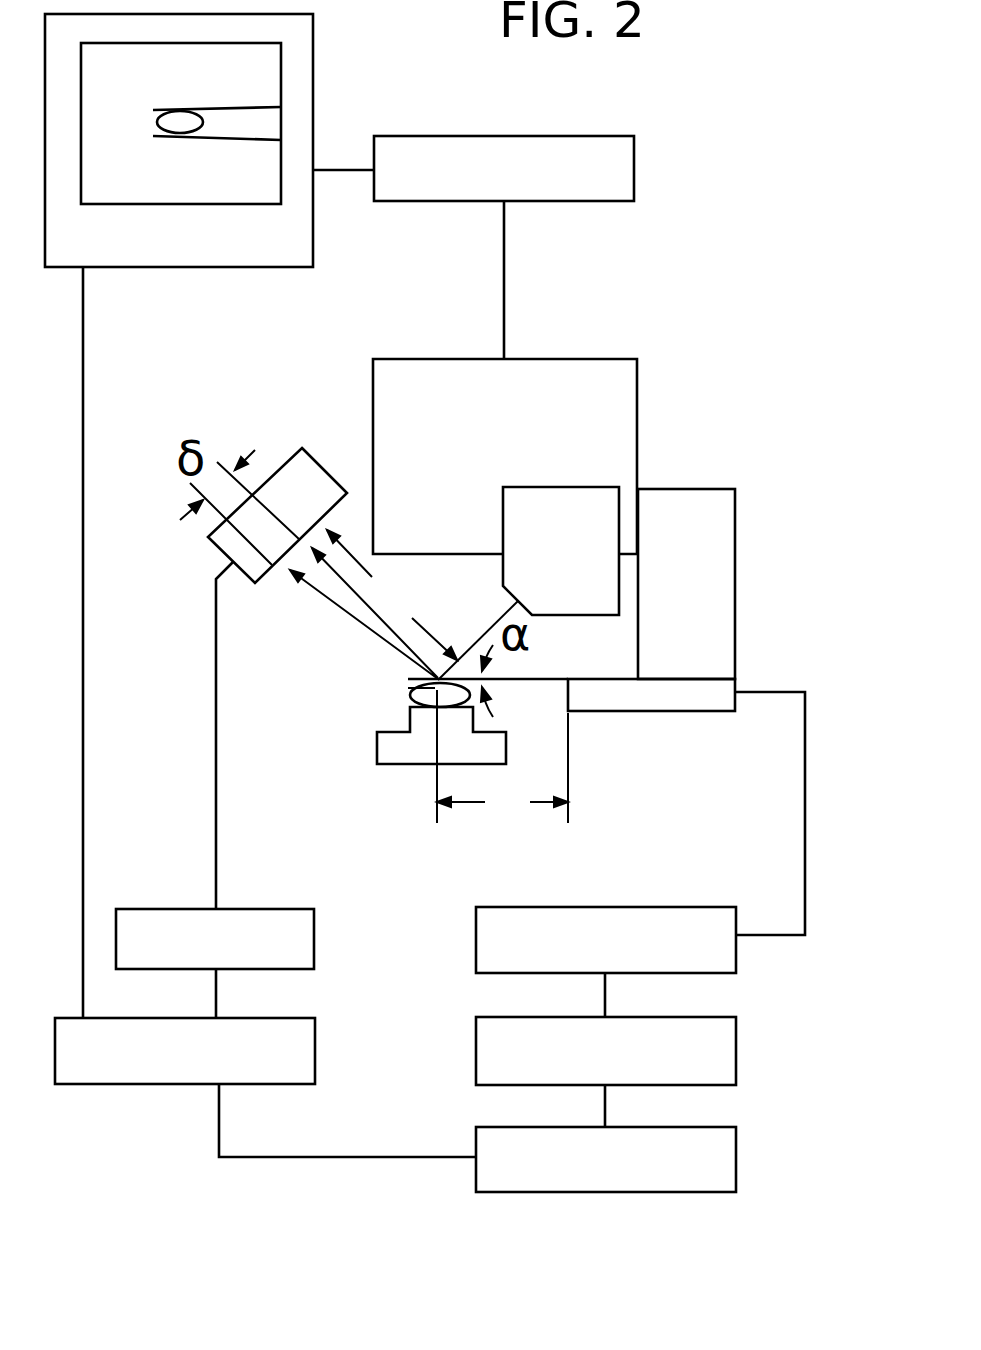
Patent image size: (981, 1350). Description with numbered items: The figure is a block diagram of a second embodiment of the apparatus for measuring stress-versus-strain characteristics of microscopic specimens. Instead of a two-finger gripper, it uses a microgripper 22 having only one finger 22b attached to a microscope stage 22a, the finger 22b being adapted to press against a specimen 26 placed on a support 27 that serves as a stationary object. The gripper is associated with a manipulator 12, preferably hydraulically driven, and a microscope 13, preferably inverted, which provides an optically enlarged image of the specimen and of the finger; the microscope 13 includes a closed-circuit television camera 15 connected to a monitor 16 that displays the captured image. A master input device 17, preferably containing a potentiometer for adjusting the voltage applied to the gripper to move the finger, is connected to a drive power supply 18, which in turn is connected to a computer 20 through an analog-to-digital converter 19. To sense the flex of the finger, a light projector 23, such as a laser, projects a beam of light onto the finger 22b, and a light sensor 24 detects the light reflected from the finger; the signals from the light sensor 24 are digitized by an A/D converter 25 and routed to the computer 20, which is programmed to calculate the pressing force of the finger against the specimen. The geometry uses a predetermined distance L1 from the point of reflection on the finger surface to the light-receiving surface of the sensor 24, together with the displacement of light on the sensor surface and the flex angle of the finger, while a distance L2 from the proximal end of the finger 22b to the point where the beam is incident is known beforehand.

The manipulator 12 is at (715, 553).
The microscope 13 is at (577, 380).
The closed-circuit television camera 15 is at (580, 160).
The monitor 16 is at (293, 62).
The master input device 17 is at (483, 935).
The drive power supply 18 is at (493, 1048).
The analog-to-digital converter 19 is at (498, 1150).
The computer 20 is at (273, 1037).
The microgripper 22 is at (571, 745).
The microscope stage 22a is at (693, 699).
The finger 22b is at (513, 678).
The light projector 23 is at (503, 588).
The light sensor 24 is at (295, 478).
The A/D converter 25 is at (262, 922).
The specimen 26 is at (413, 697).
The support 27 is at (388, 745).
The distance L1 is at (392, 595).
The distance L2 is at (502, 768).